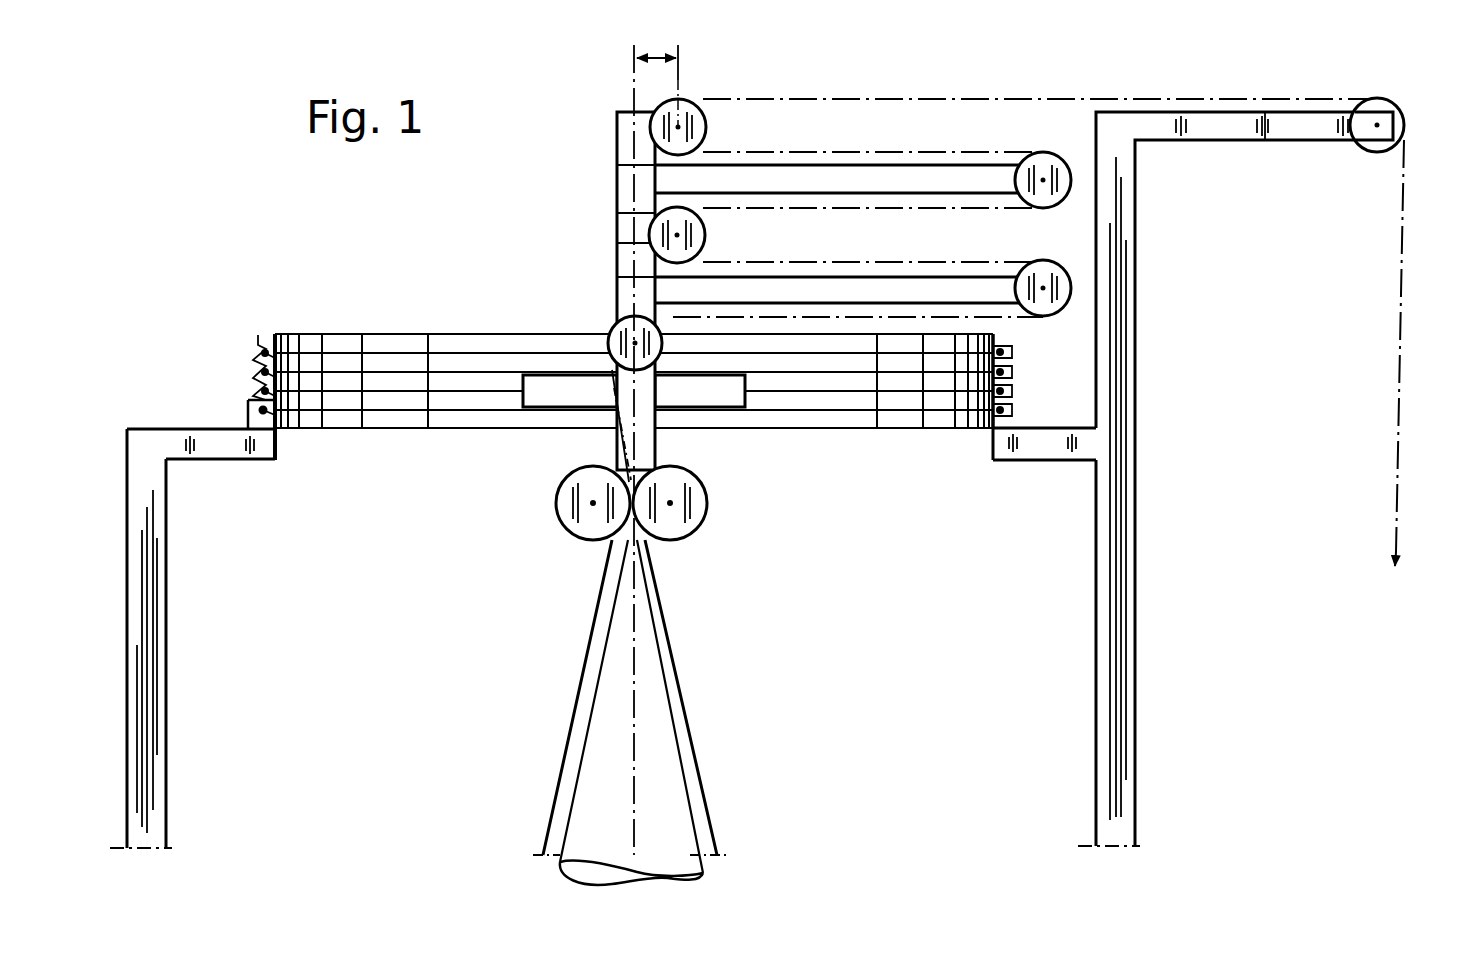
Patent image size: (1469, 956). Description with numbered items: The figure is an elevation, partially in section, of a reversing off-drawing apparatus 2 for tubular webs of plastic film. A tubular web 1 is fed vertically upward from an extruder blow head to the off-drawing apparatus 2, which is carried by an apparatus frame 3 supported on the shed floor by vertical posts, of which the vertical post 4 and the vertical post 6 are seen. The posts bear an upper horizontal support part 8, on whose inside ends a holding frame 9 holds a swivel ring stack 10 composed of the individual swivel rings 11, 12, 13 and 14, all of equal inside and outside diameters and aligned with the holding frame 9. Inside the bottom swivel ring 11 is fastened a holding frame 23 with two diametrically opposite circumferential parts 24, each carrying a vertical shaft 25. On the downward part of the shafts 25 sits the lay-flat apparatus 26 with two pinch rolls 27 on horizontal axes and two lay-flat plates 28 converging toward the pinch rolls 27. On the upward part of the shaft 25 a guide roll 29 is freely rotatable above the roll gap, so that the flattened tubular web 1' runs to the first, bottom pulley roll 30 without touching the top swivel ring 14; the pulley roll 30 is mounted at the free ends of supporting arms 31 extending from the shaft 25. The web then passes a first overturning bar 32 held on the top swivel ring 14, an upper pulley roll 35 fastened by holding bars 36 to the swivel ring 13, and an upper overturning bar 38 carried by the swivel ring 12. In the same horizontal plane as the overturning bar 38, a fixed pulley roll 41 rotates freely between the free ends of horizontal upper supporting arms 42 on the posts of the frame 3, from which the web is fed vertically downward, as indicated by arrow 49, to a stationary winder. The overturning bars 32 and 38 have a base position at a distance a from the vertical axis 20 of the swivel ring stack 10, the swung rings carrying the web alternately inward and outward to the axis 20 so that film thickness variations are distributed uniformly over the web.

The tubular web 1 is at (654, 882).
The flattened tubular web 1' is at (1025, 169).
The off-drawing apparatus 2 is at (596, 140).
The apparatus frame 3 is at (116, 605).
The vertical post 4 is at (1122, 680).
The vertical post 6 is at (148, 743).
The upper horizontal support part 8 is at (205, 443).
The holding frame 9 is at (265, 422).
The swivel ring stack 10 is at (377, 318).
The bottom swivel ring 11 is at (257, 393).
The swivel ring 12 is at (253, 375).
The swivel ring 13 is at (257, 348).
The top swivel ring 14 is at (273, 337).
The vertical axis 20 is at (628, 245).
The holding frame 23 is at (548, 390).
The circumferential part 24 is at (577, 372).
The vertical shaft 25 is at (642, 445).
The lay-flat apparatus 26 is at (583, 639).
The pinch roll 27 is at (577, 510).
The lay-flat plate 28 is at (678, 690).
The guide roll 29 is at (620, 320).
The first bottom pulley roll 30 is at (1058, 288).
The supporting arm 31 is at (800, 290).
The first overturning bar 32 is at (656, 222).
The second upper pulley roll 35 is at (1042, 155).
The holding bar 36 is at (894, 180).
The overturning bar 38 is at (692, 110).
The pulley roll 41 is at (1380, 108).
The horizontal upper supporting arm 42 is at (1210, 125).
The arrow 49 is at (1397, 560).
The distance a is at (672, 53).